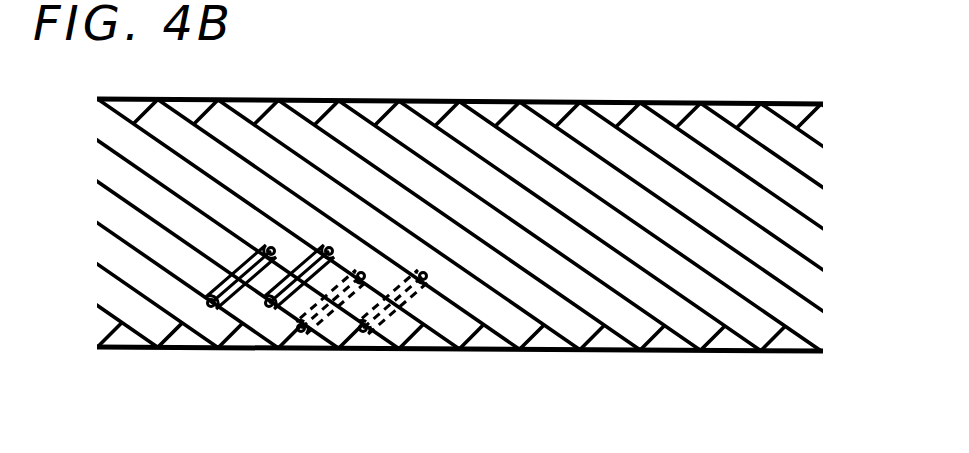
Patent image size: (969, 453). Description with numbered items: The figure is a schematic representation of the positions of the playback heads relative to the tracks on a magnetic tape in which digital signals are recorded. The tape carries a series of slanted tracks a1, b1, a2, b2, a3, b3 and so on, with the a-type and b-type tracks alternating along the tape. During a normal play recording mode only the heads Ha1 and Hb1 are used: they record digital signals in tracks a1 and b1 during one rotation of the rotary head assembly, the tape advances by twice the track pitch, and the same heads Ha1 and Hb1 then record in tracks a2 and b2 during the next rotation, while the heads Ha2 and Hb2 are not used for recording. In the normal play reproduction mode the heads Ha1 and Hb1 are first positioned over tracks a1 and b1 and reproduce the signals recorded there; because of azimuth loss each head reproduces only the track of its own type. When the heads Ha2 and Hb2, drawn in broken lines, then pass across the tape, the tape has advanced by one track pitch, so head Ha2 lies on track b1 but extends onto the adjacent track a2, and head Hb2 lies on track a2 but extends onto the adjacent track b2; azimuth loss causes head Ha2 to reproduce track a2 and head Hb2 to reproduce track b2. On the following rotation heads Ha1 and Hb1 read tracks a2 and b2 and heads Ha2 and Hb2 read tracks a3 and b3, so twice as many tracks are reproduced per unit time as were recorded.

The track a1 is at (246, 226).
The track b1 is at (276, 226).
The track a2 is at (306, 226).
The track b2 is at (367, 226).
The track a3 is at (424, 226).
The track b3 is at (484, 226).
The head Ha1 is at (218, 306).
The head Hb1 is at (276, 306).
The head Ha2 is at (305, 332).
The head Hb2 is at (368, 332).